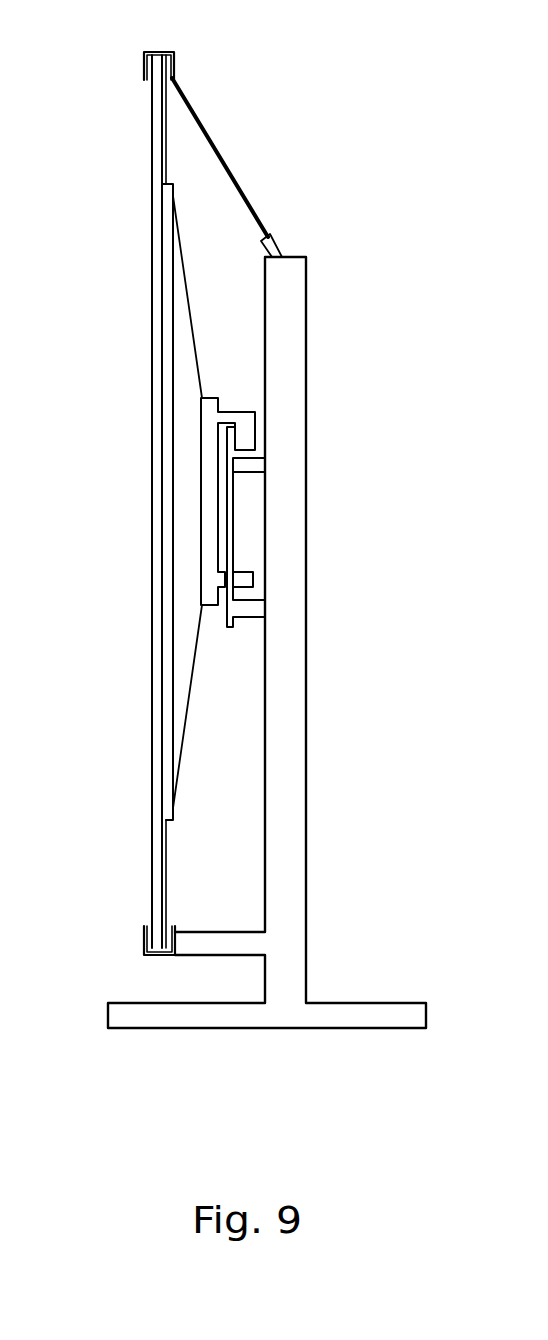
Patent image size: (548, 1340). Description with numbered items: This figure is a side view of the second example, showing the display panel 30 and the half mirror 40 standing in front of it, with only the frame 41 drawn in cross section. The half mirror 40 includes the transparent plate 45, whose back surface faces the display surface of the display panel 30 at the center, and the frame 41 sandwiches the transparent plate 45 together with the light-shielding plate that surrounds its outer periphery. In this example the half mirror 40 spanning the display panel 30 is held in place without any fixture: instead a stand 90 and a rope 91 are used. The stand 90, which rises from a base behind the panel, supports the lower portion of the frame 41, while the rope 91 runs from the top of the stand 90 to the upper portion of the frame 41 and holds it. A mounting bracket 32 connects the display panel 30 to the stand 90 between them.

The display panel 30 is at (188, 712).
The mounting bracket 32 is at (212, 418).
The half mirror 40 is at (131, 812).
The frame 41 is at (146, 62).
The transparent plate 45 is at (157, 158).
The stand 90 is at (285, 572).
The rope 91 is at (215, 140).